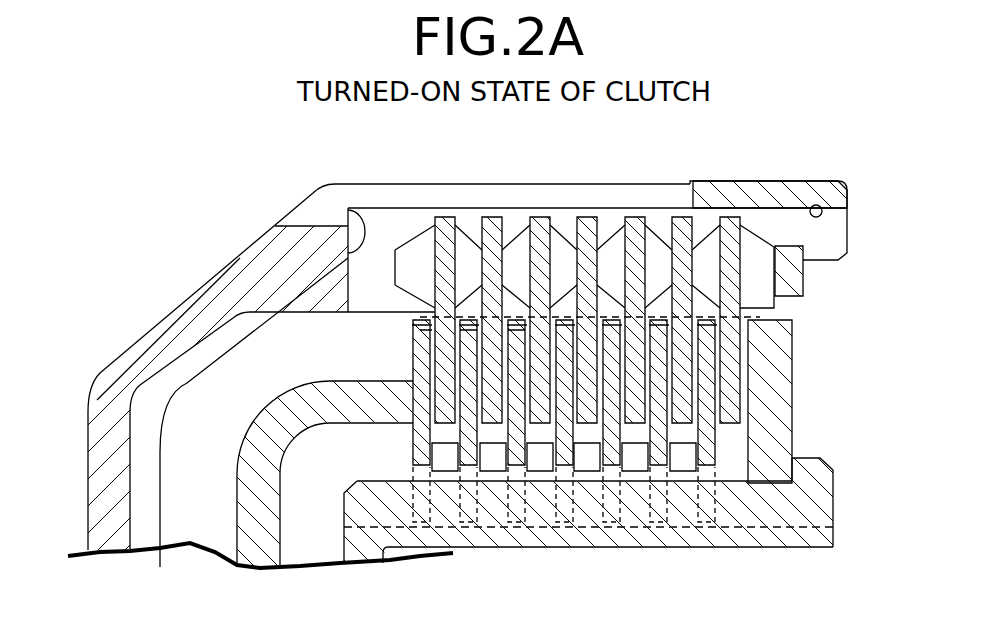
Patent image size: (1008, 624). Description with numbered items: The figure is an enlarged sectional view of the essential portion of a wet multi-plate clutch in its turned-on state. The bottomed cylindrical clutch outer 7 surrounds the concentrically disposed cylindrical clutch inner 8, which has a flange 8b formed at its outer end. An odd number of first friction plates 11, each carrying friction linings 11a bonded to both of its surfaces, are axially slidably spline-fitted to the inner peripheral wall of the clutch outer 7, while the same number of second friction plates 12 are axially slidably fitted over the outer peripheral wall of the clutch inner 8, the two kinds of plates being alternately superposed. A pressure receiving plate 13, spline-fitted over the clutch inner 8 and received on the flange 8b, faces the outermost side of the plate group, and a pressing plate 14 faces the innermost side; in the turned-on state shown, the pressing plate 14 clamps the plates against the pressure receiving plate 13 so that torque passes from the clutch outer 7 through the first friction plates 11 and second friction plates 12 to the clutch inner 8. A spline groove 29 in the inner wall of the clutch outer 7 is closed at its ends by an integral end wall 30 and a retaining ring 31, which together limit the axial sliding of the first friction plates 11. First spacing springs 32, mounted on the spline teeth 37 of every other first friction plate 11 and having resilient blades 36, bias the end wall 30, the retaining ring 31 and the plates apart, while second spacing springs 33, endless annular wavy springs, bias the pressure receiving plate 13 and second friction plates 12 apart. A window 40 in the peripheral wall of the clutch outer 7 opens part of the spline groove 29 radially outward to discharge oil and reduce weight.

The clutch outer 7 is at (238, 262).
The end wall 30 is at (355, 209).
The spline groove 29 is at (818, 206).
The pressing plate 14 is at (265, 486).
The resilient blades 36 is at (410, 232).
The spline teeth 37 is at (632, 217).
The window 40 is at (652, 224).
The first spacing springs 32 is at (750, 224).
The retaining ring 31 is at (790, 281).
The first friction plates 11 is at (728, 356).
The friction linings 11a is at (735, 377).
The second friction plates 12 is at (512, 370).
The pressure receiving plate 13 is at (770, 408).
The second spacing springs 33 is at (480, 471).
The flange 8b is at (804, 470).
The clutch inner 8 is at (816, 532).